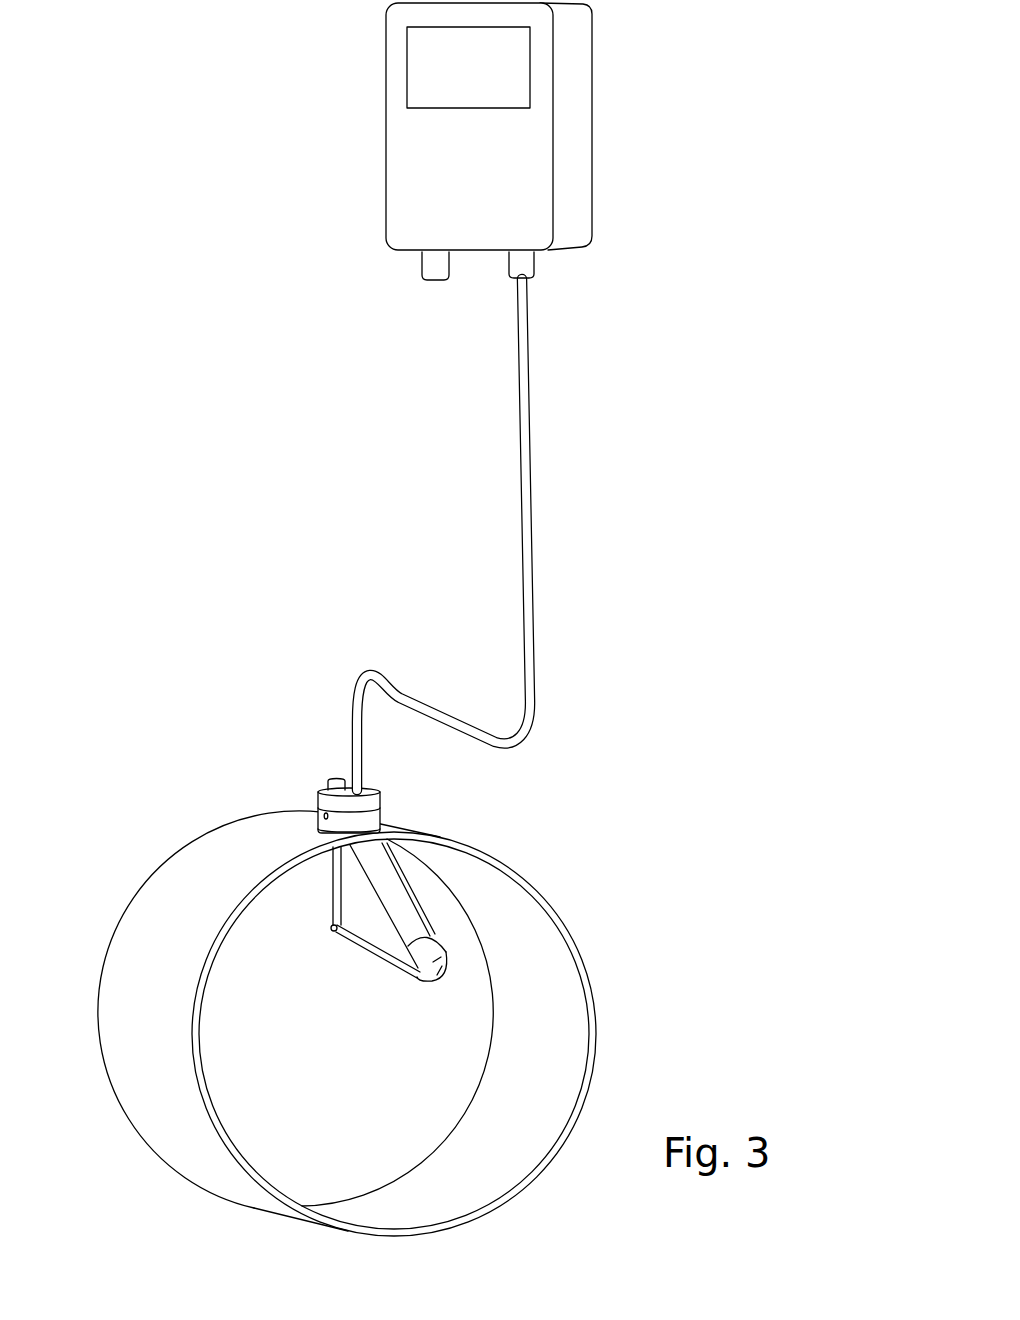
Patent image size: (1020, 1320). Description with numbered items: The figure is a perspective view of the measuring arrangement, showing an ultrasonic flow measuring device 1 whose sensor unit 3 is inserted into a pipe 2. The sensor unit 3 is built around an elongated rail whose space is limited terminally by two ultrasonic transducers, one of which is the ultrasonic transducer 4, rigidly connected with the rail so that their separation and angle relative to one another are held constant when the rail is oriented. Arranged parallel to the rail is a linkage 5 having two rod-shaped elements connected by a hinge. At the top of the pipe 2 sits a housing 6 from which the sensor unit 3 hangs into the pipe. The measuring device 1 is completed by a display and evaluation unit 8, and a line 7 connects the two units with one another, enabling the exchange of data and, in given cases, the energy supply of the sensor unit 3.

The ultrasonic flow measuring device 1 is at (467, 776).
The pipe 2 is at (580, 960).
The sensor unit 3 is at (410, 890).
The ultrasonic transducer 4 is at (430, 947).
The linkage 5 is at (337, 895).
The housing 6 is at (376, 800).
The line 7 is at (532, 568).
The display and evaluation unit 8 is at (573, 168).